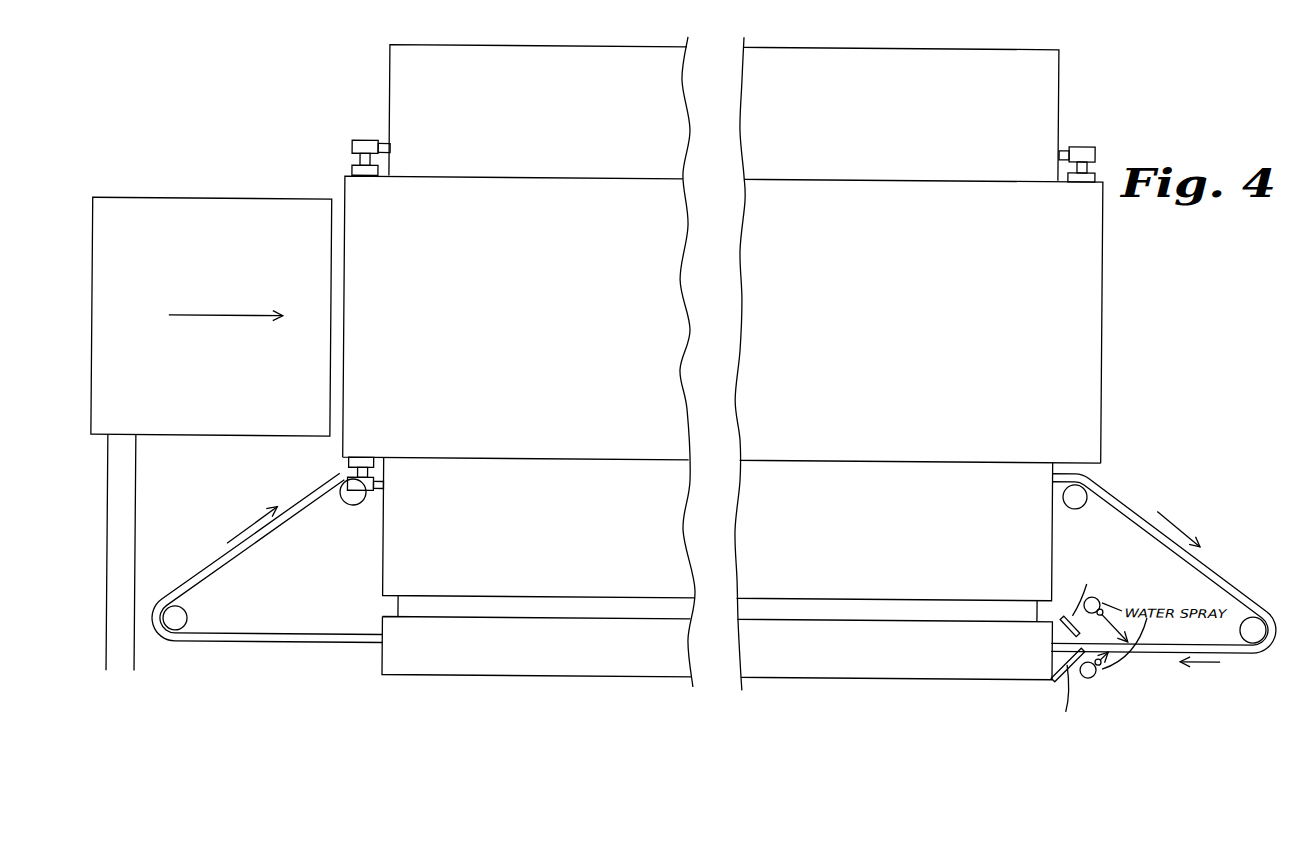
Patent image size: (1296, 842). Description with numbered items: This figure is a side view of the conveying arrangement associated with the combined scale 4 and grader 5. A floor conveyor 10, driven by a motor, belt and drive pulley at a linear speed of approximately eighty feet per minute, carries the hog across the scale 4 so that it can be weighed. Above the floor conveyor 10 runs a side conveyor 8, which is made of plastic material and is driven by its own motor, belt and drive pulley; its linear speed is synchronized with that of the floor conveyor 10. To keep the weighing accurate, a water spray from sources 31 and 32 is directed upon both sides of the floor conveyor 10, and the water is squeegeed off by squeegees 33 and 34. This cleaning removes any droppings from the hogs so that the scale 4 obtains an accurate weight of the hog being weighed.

The scale 4 is at (832, 677).
The grader 5 is at (1054, 539).
The side conveyor 8 is at (1102, 280).
The floor conveyor 10 is at (1123, 500).
The water spray source 31 is at (1102, 596).
The water spray source 32 is at (1091, 676).
The squeegee 33 is at (1073, 614).
The squeegee 34 is at (1057, 680).